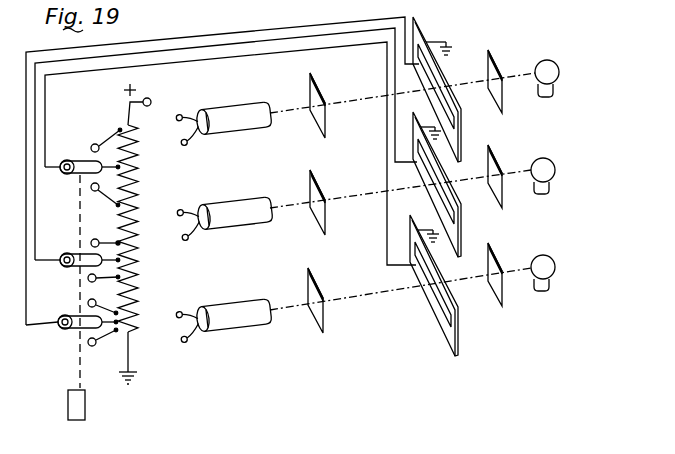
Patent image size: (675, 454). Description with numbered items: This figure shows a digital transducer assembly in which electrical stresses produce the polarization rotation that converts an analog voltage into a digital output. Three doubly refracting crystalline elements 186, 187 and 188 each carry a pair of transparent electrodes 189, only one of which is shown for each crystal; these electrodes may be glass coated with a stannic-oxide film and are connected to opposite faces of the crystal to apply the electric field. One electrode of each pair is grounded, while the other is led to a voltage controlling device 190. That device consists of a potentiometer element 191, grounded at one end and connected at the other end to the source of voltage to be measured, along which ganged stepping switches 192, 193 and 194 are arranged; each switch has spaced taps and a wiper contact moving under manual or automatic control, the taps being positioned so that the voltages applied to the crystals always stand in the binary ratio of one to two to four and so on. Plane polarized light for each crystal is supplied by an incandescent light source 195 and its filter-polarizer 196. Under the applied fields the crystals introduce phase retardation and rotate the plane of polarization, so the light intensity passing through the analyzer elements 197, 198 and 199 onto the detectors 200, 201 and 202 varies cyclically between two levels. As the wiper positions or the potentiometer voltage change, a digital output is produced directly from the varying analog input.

The crystalline element 186 is at (424, 20).
The crystalline element 187 is at (461, 226).
The crystalline element 188 is at (459, 334).
The transparent electrode 189 is at (450, 117).
The voltage controlling device 190 is at (167, 188).
The potentiometer element 191 is at (138, 245).
The stepping switch 192 is at (80, 143).
The stepping switch 193 is at (72, 235).
The stepping switch 194 is at (65, 301).
The incandescent light source 195 is at (553, 64).
The filter-polarizer 196 is at (492, 55).
The analyzer element 197 is at (314, 80).
The analyzer element 198 is at (314, 177).
The analyzer element 199 is at (312, 275).
The detector 200 is at (236, 110).
The detector 201 is at (237, 203).
The detector 202 is at (237, 305).